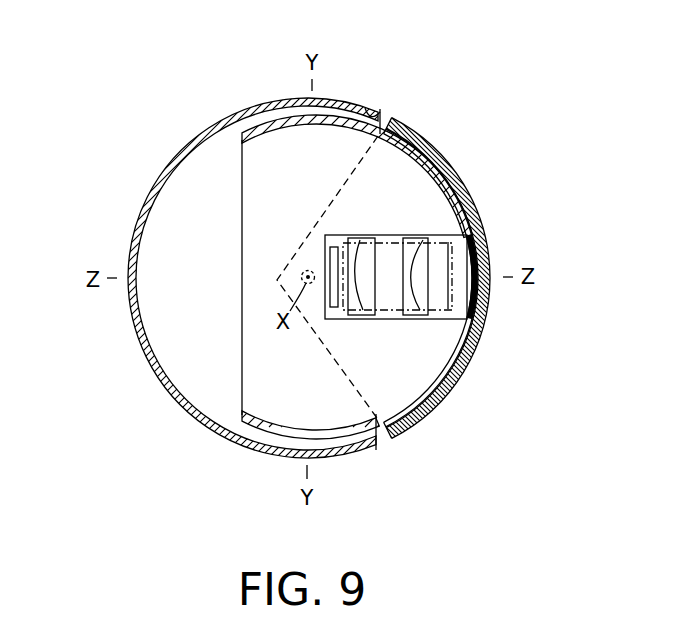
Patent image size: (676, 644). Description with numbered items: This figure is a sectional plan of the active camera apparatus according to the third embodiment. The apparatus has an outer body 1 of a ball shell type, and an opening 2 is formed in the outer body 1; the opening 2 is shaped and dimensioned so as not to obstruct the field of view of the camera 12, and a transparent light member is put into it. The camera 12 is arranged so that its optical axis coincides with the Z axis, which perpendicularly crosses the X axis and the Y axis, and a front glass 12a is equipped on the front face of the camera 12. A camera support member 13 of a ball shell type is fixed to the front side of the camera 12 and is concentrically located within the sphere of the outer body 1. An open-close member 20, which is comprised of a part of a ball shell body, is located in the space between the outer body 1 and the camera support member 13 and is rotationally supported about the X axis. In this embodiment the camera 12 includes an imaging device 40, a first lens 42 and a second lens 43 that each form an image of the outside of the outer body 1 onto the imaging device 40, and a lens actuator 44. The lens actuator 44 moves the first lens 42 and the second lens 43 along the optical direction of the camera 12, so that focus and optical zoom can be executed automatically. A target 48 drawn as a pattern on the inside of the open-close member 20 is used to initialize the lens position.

The outer body 1 is at (178, 156).
The opening 2 is at (382, 111).
The camera 12 is at (461, 357).
The front glass 12a is at (465, 290).
The camera support member 13 is at (433, 146).
The open-close member 20 is at (461, 183).
The imaging device 40 is at (338, 247).
The first lens 42 is at (417, 319).
The second lens 43 is at (363, 319).
The lens actuator 44 is at (389, 242).
The target 48 is at (478, 242).